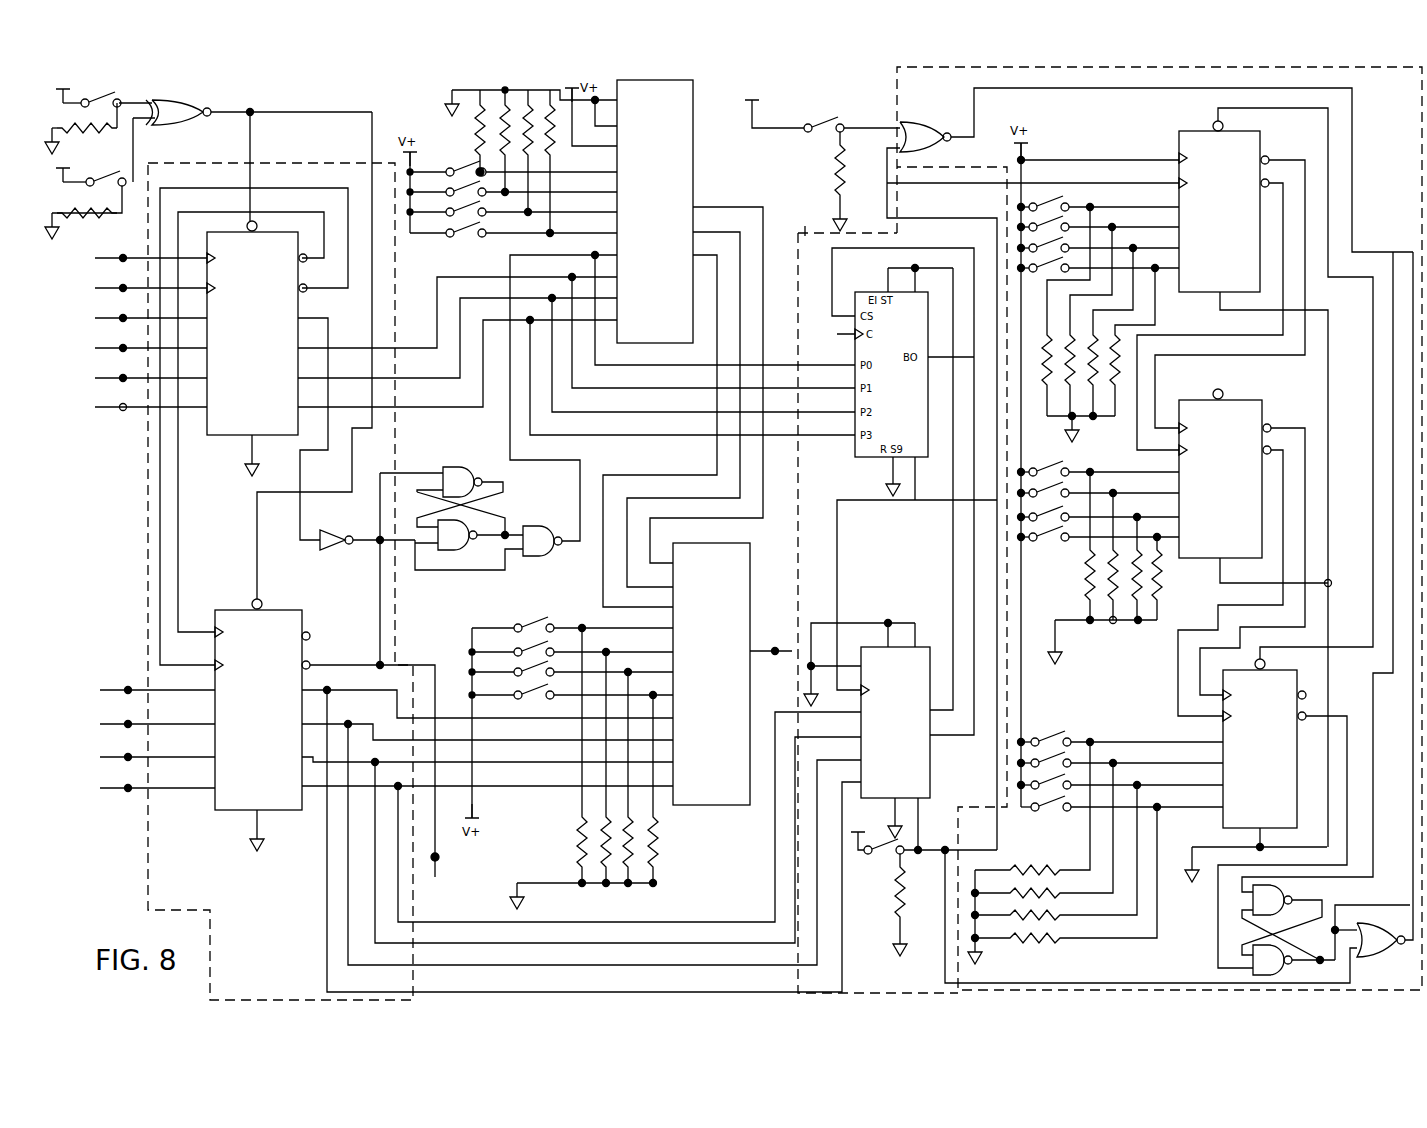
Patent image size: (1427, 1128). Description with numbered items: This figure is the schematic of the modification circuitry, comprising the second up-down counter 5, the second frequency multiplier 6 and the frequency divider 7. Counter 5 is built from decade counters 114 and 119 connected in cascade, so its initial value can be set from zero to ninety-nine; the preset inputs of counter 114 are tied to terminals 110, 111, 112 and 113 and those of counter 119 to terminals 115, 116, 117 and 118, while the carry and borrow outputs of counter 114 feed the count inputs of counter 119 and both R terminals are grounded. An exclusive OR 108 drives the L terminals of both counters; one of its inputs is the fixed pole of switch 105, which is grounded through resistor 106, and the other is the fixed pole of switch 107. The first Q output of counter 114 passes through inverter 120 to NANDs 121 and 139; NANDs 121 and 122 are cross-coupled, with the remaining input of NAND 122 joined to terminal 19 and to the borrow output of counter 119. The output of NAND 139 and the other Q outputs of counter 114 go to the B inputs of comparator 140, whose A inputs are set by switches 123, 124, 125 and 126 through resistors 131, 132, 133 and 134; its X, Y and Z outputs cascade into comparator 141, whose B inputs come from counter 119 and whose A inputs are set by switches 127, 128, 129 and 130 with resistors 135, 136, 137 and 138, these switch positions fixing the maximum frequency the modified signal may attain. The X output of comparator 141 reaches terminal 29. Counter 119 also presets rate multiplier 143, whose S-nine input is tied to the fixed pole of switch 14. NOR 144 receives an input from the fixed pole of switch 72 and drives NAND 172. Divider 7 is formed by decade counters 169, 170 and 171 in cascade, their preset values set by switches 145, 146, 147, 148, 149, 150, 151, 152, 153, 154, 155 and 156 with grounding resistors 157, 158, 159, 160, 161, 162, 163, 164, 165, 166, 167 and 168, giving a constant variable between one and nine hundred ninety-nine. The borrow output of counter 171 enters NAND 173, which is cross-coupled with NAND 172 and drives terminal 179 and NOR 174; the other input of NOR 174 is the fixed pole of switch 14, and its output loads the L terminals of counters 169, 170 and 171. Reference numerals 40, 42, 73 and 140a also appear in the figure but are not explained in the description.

The second up-down type counter 5 is at (146, 864).
The second frequency multiplier 6 is at (805, 222).
The frequency divider 7 is at (894, 82).
The switch 14 is at (888, 848).
The terminal 19 is at (438, 860).
The terminal 29 is at (776, 646).
The count down input 40 is at (70, 286).
The count up input 42 is at (70, 256).
The switch 72 is at (818, 116).
The resistor 73 is at (832, 186).
The switch 105 is at (114, 97).
The resistor 106 is at (108, 214).
The switch 107 is at (120, 146).
The exclusive OR 108 is at (173, 130).
The terminal 110 is at (72, 316).
The terminal 111 is at (70, 346).
The terminal 112 is at (72, 376).
The terminal 113 is at (74, 410).
The decade counter 114 is at (298, 305).
The terminal 115 is at (72, 688).
The terminal 116 is at (72, 720).
The terminal 117 is at (72, 753).
The terminal 118 is at (72, 785).
The decade counter 119 is at (308, 652).
The inverter 120 is at (336, 560).
The NAND 121 is at (465, 548).
The NAND 122 is at (470, 466).
The switch 123 is at (448, 164).
The switch 124 is at (452, 186).
The switch 125 is at (484, 220).
The switch 126 is at (474, 235).
The switch 127 is at (537, 616).
The switch 128 is at (516, 646).
The switch 129 is at (516, 668).
The switch 130 is at (540, 694).
The resistor 131 is at (476, 136).
The resistor 132 is at (502, 92).
The resistor 133 is at (528, 94).
The resistor 134 is at (551, 150).
The resistor 135 is at (578, 842).
The resistor 136 is at (608, 880).
The resistor 137 is at (632, 878).
The resistor 138 is at (662, 846).
The NAND 139 is at (566, 534).
The comparator 140 is at (693, 180).
The resistor 140a is at (896, 910).
The comparator 141 is at (743, 606).
The rate multiplier 143 is at (928, 784).
The NOR 144 is at (927, 130).
The switch 145 is at (1060, 206).
The switch 146 is at (1030, 222).
The switch 147 is at (1030, 246).
The switch 148 is at (1028, 270).
The switch 149 is at (1066, 470).
The switch 150 is at (1020, 472).
The switch 151 is at (1018, 502).
The switch 152 is at (1056, 538).
The switch 153 is at (1032, 868).
The switch 154 is at (1060, 892).
The switch 155 is at (1066, 914).
The switch 156 is at (1071, 937).
The resistor 157 is at (1047, 412).
The resistor 158 is at (1052, 370).
The resistor 159 is at (1106, 368).
The resistor 160 is at (1120, 408).
The resistor 161 is at (1088, 572).
The resistor 162 is at (1108, 620).
The resistor 163 is at (1132, 620).
The resistor 164 is at (1158, 578).
The resistor 165 is at (1044, 740).
The resistor 166 is at (1052, 752).
The resistor 167 is at (1044, 808).
The resistor 168 is at (1066, 810).
The decade counter 169 is at (1201, 290).
The decade counter 170 is at (1234, 558).
The decade counter 171 is at (1216, 822).
The NAND 172 is at (1288, 894).
The NAND 173 is at (1284, 966).
The NOR 174 is at (1372, 956).
The terminal 179 is at (1344, 930).